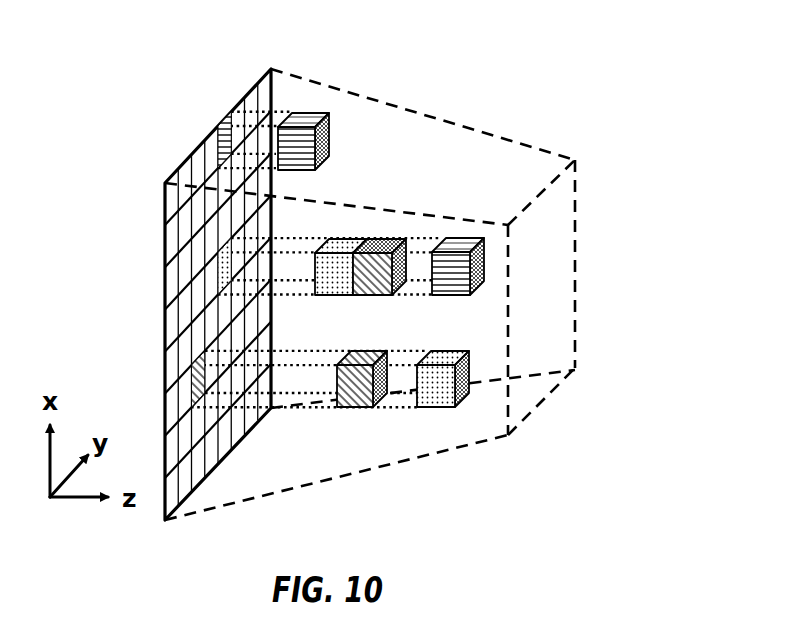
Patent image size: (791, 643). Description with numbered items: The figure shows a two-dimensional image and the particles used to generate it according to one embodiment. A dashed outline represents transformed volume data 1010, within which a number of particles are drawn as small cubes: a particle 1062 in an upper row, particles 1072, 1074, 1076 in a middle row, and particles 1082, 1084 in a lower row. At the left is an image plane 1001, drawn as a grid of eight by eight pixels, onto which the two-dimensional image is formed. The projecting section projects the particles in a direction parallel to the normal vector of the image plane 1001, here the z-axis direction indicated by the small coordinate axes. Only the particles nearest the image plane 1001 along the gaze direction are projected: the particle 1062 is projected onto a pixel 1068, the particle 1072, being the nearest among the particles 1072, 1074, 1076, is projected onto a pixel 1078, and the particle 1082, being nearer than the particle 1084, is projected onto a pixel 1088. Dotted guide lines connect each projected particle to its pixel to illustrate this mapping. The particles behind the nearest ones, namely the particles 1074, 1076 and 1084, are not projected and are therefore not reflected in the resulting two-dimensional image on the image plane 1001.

The image plane 1001 is at (164, 322).
The transformed volume data 1010 is at (576, 255).
The particle 1062 is at (290, 118).
The pixel 1068 is at (222, 133).
The particle 1072 is at (344, 245).
The particle 1074 is at (396, 243).
The particle 1076 is at (472, 241).
The pixel 1078 is at (220, 273).
The particle 1082 is at (351, 400).
The particle 1084 is at (437, 407).
The pixel 1088 is at (194, 380).